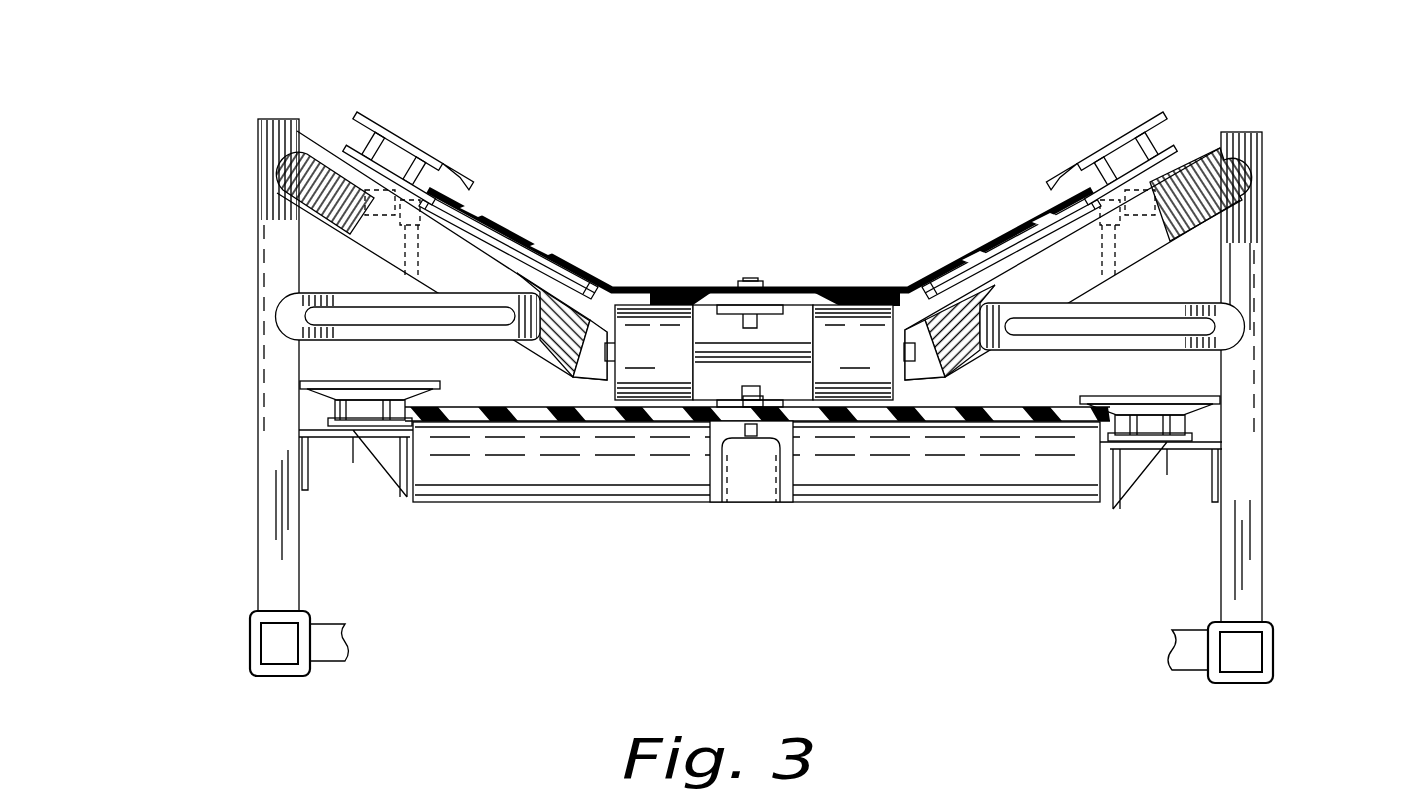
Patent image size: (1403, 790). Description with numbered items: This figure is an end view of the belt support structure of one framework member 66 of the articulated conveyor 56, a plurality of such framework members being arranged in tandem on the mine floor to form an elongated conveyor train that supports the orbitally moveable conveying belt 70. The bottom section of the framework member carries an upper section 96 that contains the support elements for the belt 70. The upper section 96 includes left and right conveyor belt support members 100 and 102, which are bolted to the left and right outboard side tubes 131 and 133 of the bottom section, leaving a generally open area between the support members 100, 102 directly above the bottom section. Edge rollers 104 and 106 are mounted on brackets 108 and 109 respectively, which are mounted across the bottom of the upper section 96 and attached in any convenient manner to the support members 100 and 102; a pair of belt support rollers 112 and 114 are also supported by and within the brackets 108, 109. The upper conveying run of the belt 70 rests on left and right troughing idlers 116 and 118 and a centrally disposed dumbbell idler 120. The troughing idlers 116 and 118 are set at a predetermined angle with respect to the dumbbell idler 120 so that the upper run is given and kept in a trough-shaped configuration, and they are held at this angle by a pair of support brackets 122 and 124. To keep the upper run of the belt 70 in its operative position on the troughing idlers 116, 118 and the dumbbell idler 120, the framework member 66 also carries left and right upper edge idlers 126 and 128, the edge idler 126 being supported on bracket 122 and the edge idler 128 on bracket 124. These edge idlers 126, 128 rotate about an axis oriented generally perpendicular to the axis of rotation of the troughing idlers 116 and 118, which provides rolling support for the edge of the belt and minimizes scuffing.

The articulated conveyor 56 is at (800, 124).
The framework member 66 is at (1292, 162).
The conveying belt 70 is at (680, 323).
The upper section 96 is at (1272, 388).
The left conveyor belt support member 100 is at (282, 119).
The right conveyor belt support member 102 is at (1245, 132).
The edge roller 104 is at (312, 380).
The edge roller 106 is at (1128, 396).
The bracket 108 is at (315, 430).
The bracket 109 is at (1203, 442).
The belt support roller 112 is at (525, 440).
The belt support roller 114 is at (975, 478).
The left troughing idler 116 is at (497, 243).
The right troughing idler 118 is at (1003, 262).
The dumbbell idler 120 is at (837, 322).
The support bracket 122 is at (278, 181).
The support bracket 124 is at (1205, 203).
The left upper edge idler 126 is at (432, 172).
The right upper edge idler 128 is at (1112, 152).
The left outboard side tube 131 is at (255, 660).
The right outboard side tube 133 is at (1240, 677).